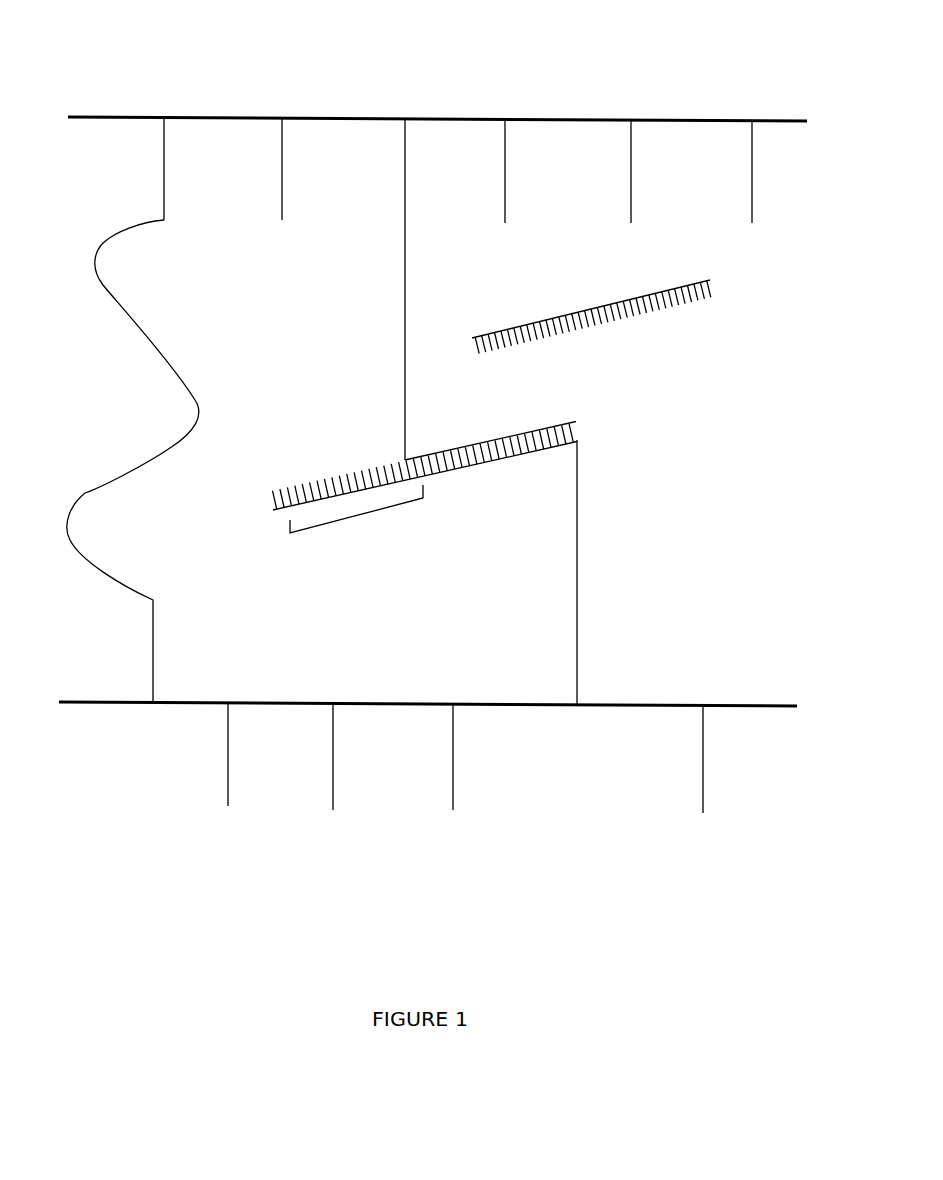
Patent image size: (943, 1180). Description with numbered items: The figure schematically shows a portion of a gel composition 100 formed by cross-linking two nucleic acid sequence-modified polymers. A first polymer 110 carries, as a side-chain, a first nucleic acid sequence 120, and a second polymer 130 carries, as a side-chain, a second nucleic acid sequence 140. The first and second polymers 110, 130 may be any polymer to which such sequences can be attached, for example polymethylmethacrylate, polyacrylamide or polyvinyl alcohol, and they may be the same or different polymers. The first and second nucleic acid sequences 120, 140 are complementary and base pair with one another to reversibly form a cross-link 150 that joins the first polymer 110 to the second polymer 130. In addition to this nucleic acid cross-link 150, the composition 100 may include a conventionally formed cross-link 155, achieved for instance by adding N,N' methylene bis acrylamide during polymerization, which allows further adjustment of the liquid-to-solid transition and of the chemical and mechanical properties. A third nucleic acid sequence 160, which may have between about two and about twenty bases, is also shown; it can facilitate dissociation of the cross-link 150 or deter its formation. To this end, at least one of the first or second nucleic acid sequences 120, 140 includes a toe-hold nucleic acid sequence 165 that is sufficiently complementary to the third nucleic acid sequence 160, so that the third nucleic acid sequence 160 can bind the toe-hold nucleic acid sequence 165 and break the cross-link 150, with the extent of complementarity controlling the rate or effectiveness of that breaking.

The gel composition 100 is at (123, 59).
The first polymer 110 is at (288, 117).
The first nucleic acid sequence 120 is at (477, 442).
The second polymer 130 is at (180, 705).
The second nucleic acid sequence 140 is at (532, 452).
The cross-link 150 is at (577, 430).
The conventionally formed cross-link 155 is at (85, 493).
The third nucleic acid sequence 160 is at (547, 320).
The toe-hold nucleic acid sequence 165 is at (356, 517).